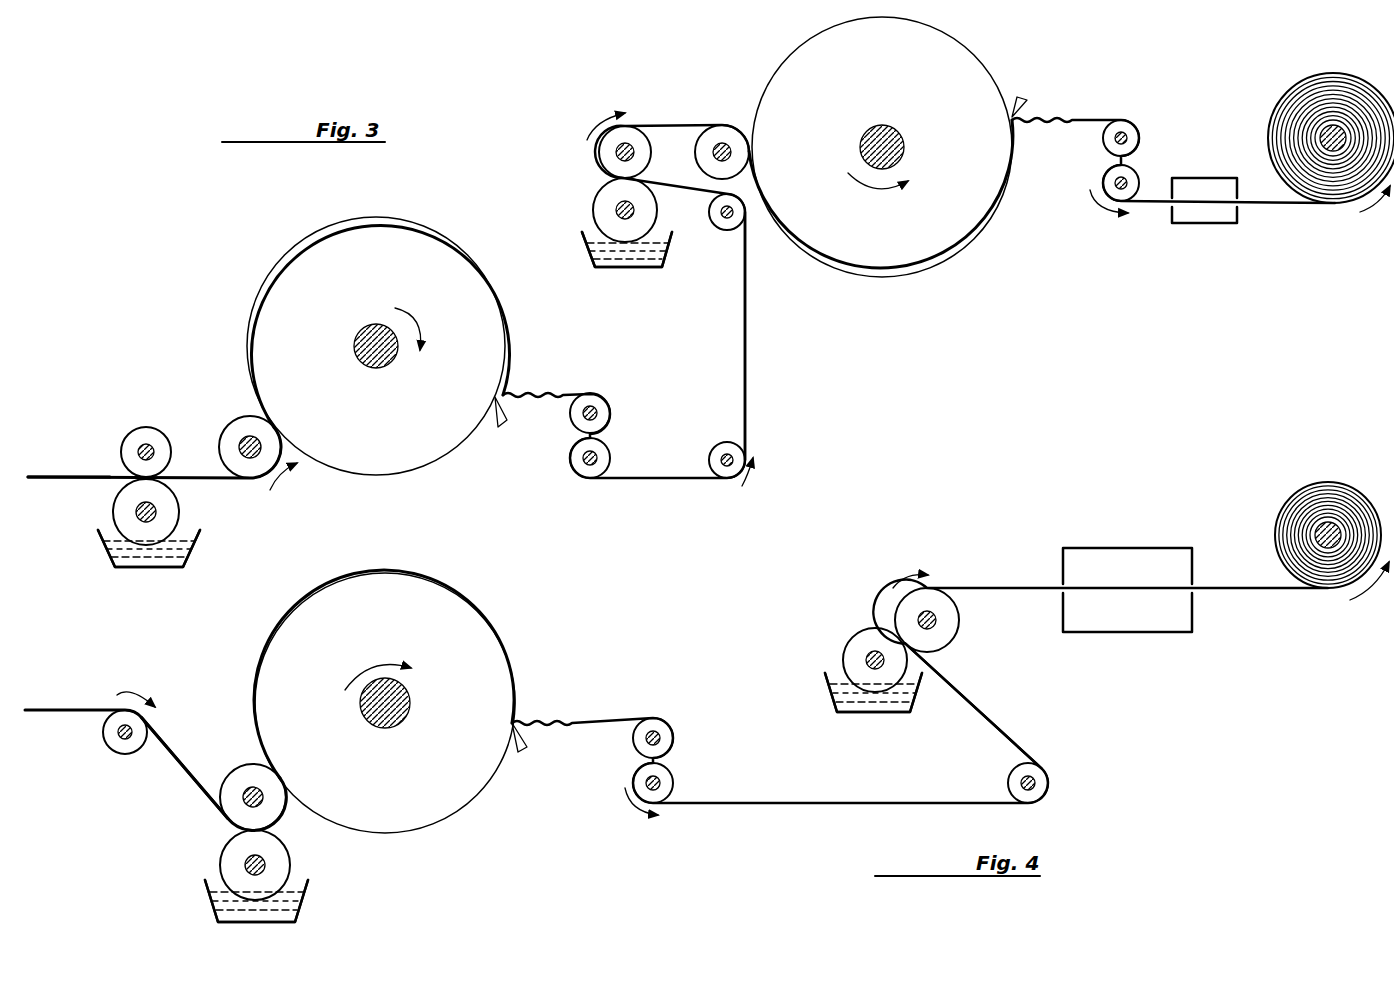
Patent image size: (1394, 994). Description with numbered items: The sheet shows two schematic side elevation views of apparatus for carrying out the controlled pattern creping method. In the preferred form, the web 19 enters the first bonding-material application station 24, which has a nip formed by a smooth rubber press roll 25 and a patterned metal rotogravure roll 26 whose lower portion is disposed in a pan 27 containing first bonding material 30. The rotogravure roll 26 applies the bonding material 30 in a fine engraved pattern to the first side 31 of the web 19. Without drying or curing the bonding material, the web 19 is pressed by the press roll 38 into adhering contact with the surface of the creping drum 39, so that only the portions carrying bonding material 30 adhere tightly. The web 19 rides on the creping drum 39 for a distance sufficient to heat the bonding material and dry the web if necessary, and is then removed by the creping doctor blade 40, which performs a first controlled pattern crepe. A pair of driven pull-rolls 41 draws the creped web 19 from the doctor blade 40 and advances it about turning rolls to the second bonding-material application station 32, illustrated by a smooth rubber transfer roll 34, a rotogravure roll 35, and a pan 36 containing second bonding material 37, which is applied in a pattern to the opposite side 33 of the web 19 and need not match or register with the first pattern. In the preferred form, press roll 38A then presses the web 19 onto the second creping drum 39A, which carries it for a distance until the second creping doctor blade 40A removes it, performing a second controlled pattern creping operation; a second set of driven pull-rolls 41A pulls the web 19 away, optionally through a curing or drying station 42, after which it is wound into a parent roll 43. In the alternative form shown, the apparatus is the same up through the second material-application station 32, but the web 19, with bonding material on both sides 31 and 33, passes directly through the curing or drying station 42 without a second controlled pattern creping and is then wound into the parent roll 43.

In FIG. 3, the web 19 is at (72, 476).
In FIG. 4, the web 19 is at (100, 708).
In FIG. 3, the first bonding-material application station 24 is at (167, 590).
In FIG. 4, the first bonding-material application station 24 is at (335, 935).
In FIG. 3, the smooth rubber press roll 25 is at (143, 436).
In FIG. 4, the smooth rubber press roll 25 is at (245, 775).
In FIG. 3, the patterned metal rotogravure roll 26 is at (173, 506).
In FIG. 4, the patterned metal rotogravure roll 26 is at (232, 851).
In FIG. 3, the pan 27 is at (107, 556).
In FIG. 4, the pan 27 is at (205, 886).
In FIG. 3, the first bonding material 30 is at (180, 551).
In FIG. 4, the first bonding material 30 is at (298, 900).
In FIG. 3, the first side of the web 31 is at (88, 486).
In FIG. 4, the first side of the web 31 is at (180, 764).
In FIG. 3, the second bonding-material application station 32 is at (650, 314).
In FIG. 4, the second bonding-material application station 32 is at (888, 745).
In FIG. 3, the opposite side of the web 33 is at (740, 338).
In FIG. 4, the opposite side of the web 33 is at (1000, 730).
In FIG. 3, the smooth rubber transfer roll 34 is at (606, 153).
In FIG. 4, the smooth rubber transfer roll 34 is at (950, 612).
In FIG. 3, the rotogravure roll 35 is at (602, 200).
In FIG. 4, the rotogravure roll 35 is at (858, 648).
In FIG. 3, the pan 36 is at (583, 251).
In FIG. 4, the pan 36 is at (827, 694).
In FIG. 3, the second bonding material 37 is at (662, 256).
In FIG. 4, the second bonding material 37 is at (908, 709).
In FIG. 3, the press roll 38 is at (238, 424).
In FIG. 3, the press roll 38A is at (728, 138).
In FIG. 3, the creping drum 39 is at (418, 450).
In FIG. 4, the creping drum 39 is at (455, 790).
In FIG. 3, the second creping drum 39A is at (912, 250).
In FIG. 3, the creping doctor blade 40 is at (503, 427).
In FIG. 4, the creping doctor blade 40 is at (527, 749).
In FIG. 3, the second creping doctor blade 40A is at (1024, 99).
In FIG. 3, the driven pull-rolls 41 is at (603, 511).
In FIG. 4, the driven pull-rolls 41 is at (725, 836).
In FIG. 3, the second set of driven pull-rolls 41A is at (1134, 267).
In FIG. 3, the curing or drying station 42 is at (1205, 178).
In FIG. 4, the curing or drying station 42 is at (1127, 558).
In FIG. 3, the parent roll 43 is at (1328, 85).
In FIG. 4, the parent roll 43 is at (1318, 495).